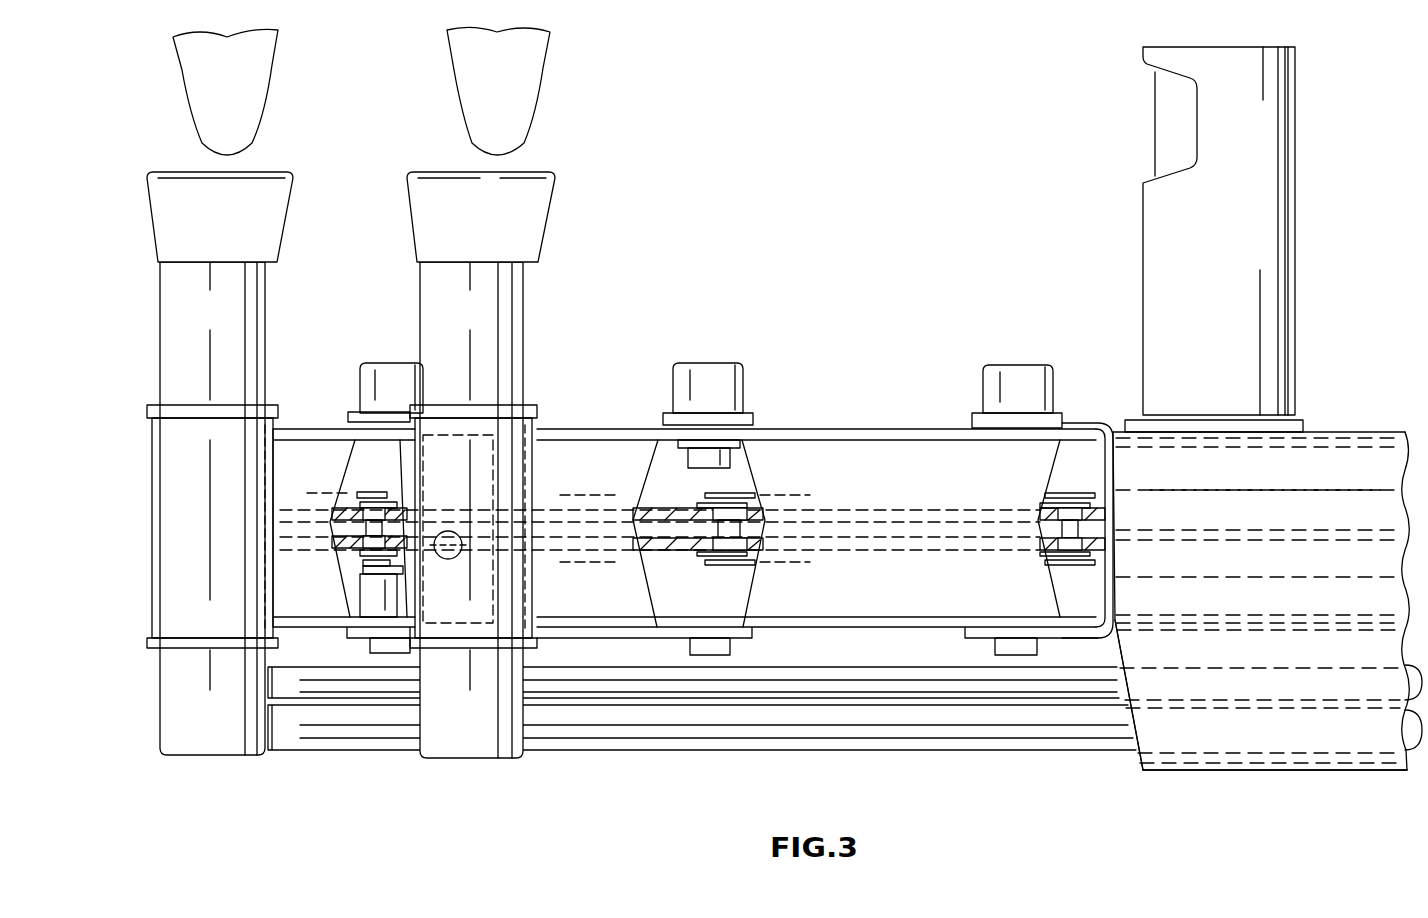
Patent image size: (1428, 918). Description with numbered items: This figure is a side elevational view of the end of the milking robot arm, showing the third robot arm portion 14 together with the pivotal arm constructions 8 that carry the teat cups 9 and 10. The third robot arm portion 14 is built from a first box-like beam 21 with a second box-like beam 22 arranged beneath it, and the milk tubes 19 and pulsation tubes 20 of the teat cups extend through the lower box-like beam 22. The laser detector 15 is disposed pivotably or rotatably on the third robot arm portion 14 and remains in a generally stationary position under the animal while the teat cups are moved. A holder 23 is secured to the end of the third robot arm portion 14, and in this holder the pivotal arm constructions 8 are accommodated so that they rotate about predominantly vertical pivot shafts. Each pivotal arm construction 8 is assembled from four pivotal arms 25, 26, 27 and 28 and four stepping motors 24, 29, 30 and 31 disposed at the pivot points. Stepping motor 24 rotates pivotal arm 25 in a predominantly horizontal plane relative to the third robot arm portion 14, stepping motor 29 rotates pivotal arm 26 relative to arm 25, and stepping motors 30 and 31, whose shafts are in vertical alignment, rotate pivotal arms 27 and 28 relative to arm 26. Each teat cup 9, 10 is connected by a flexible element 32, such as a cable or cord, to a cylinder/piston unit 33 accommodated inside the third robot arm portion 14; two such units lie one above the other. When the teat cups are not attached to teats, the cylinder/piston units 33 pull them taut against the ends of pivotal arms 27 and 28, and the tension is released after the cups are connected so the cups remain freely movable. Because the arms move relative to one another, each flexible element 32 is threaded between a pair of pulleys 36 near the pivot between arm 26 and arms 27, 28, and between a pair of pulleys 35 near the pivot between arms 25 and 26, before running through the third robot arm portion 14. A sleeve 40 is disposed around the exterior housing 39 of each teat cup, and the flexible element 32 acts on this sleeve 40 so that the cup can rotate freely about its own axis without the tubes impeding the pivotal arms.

The pivotal arm construction 8 is at (875, 423).
The teat cup 9 is at (275, 215).
The teat cup 10 is at (540, 218).
The third robot arm portion 14 is at (1233, 770).
The laser detector 15 is at (1160, 217).
The milk tube 19 is at (870, 725).
The pulsation tube 20 is at (818, 680).
The first box-like beam 21 is at (1335, 432).
The second box-like beam 22 is at (1145, 735).
The holder 23 is at (1083, 425).
The stepping motor 24 is at (1015, 360).
The pivotal arm 25 is at (835, 455).
The pivotal arm 26 is at (597, 440).
The pivotal arm 27 is at (310, 440).
The pivotal arm 28 is at (412, 450).
The stepping motor 29 is at (705, 360).
The stepping motor 30 is at (395, 360).
The stepping motor 31 is at (365, 600).
The flexible element 32 is at (680, 525).
The cylinder/piston unit 33 is at (1283, 507).
The pair of pulleys 35 is at (712, 505).
The pair of pulleys 36 is at (358, 528).
The exterior housing 39 is at (272, 335).
The sleeve 40 is at (180, 578).